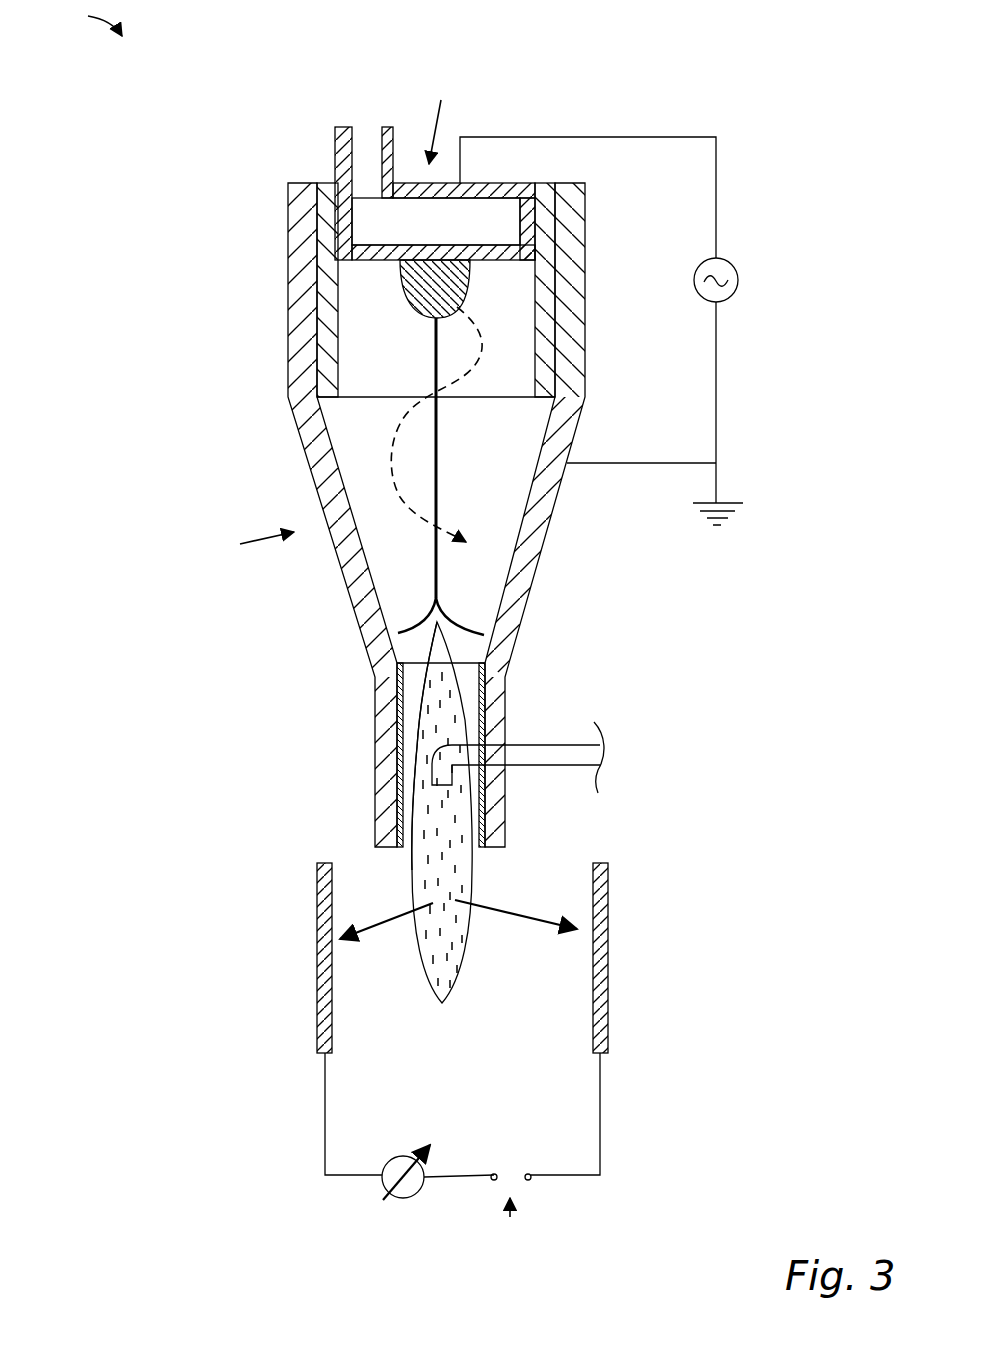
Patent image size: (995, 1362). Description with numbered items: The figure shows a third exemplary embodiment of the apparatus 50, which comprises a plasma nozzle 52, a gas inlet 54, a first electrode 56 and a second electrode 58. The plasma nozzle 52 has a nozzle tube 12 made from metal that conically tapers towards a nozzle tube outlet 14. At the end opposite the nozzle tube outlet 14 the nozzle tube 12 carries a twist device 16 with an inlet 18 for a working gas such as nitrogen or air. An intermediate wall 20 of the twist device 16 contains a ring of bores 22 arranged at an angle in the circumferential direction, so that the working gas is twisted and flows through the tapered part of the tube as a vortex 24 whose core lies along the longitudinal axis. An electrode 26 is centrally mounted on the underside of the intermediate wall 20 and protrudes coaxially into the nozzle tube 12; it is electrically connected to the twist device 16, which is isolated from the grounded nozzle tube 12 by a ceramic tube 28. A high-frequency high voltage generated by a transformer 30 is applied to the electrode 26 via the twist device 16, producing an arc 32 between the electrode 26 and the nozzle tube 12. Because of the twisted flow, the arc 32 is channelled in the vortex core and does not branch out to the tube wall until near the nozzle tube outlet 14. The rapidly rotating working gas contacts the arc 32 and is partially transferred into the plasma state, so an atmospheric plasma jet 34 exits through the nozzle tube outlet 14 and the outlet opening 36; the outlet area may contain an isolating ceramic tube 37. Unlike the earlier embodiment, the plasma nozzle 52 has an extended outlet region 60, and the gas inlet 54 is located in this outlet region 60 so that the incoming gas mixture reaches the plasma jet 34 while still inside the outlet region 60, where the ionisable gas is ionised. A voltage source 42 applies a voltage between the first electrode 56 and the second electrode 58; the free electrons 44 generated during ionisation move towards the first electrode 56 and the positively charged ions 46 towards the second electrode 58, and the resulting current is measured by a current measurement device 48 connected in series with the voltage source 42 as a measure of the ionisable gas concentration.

The apparatus 50 is at (83, 18).
The nozzle tube 12 is at (303, 375).
The nozzle tube outlet 14 is at (481, 677).
The twist device 16 is at (464, 163).
The inlet 18 is at (338, 142).
The intermediate wall 20 is at (412, 246).
The bores 22 is at (378, 258).
The vortex 24 is at (393, 442).
The electrode 26 is at (418, 292).
The ceramic tube 28 is at (543, 243).
The transformer 30 is at (739, 270).
The arc 32 is at (441, 458).
The plasma jet 34 is at (452, 881).
The outlet opening 36 is at (421, 855).
The isolating ceramic tube 37 is at (490, 721).
The voltage source 42 is at (515, 1217).
The free electrons 44 is at (380, 942).
The positively charged ions 46 is at (527, 922).
The current measurement device 48 is at (401, 1203).
The plasma nozzle 52 is at (391, 537).
The gas inlet 54 is at (551, 757).
The first electrode 56 is at (317, 895).
The second electrode 58 is at (613, 910).
The outlet region 60 is at (386, 757).